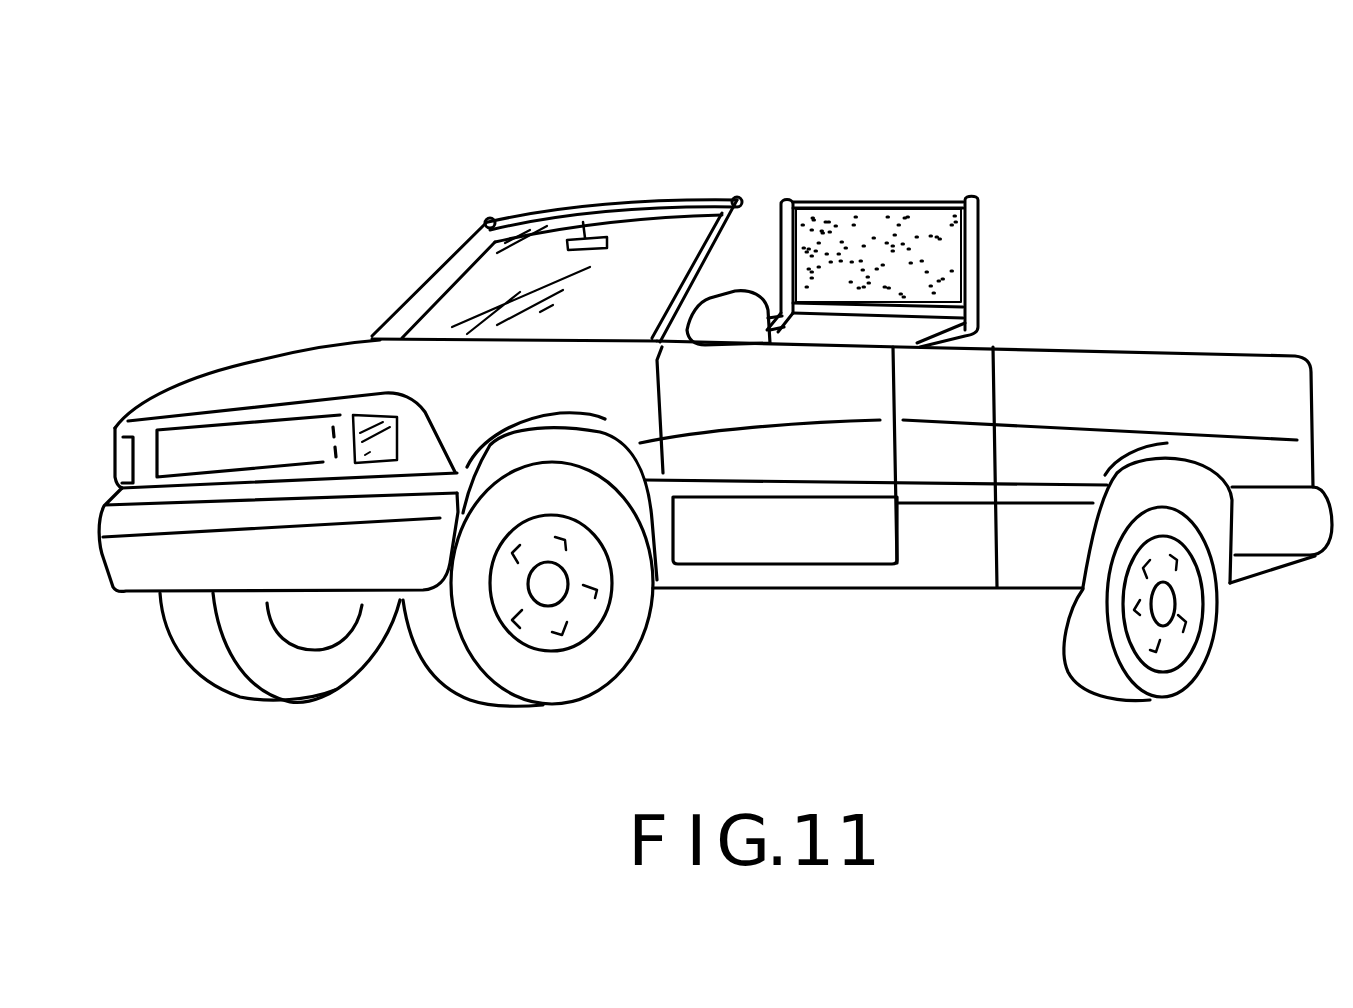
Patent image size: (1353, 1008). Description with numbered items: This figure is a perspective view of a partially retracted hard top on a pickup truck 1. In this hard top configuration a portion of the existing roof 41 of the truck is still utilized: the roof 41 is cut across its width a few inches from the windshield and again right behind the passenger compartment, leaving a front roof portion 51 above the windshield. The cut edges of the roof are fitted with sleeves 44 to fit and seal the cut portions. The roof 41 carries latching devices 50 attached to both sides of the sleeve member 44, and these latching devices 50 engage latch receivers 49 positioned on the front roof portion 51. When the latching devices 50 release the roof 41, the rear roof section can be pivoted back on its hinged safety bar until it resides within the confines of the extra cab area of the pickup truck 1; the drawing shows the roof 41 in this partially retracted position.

The pickup truck 1 is at (1262, 275).
The roof 41 is at (913, 237).
The sleeve 44 is at (527, 213).
The latch receiver 49 is at (486, 221).
The latching device 50 is at (788, 197).
The front roof portion 51 is at (590, 205).